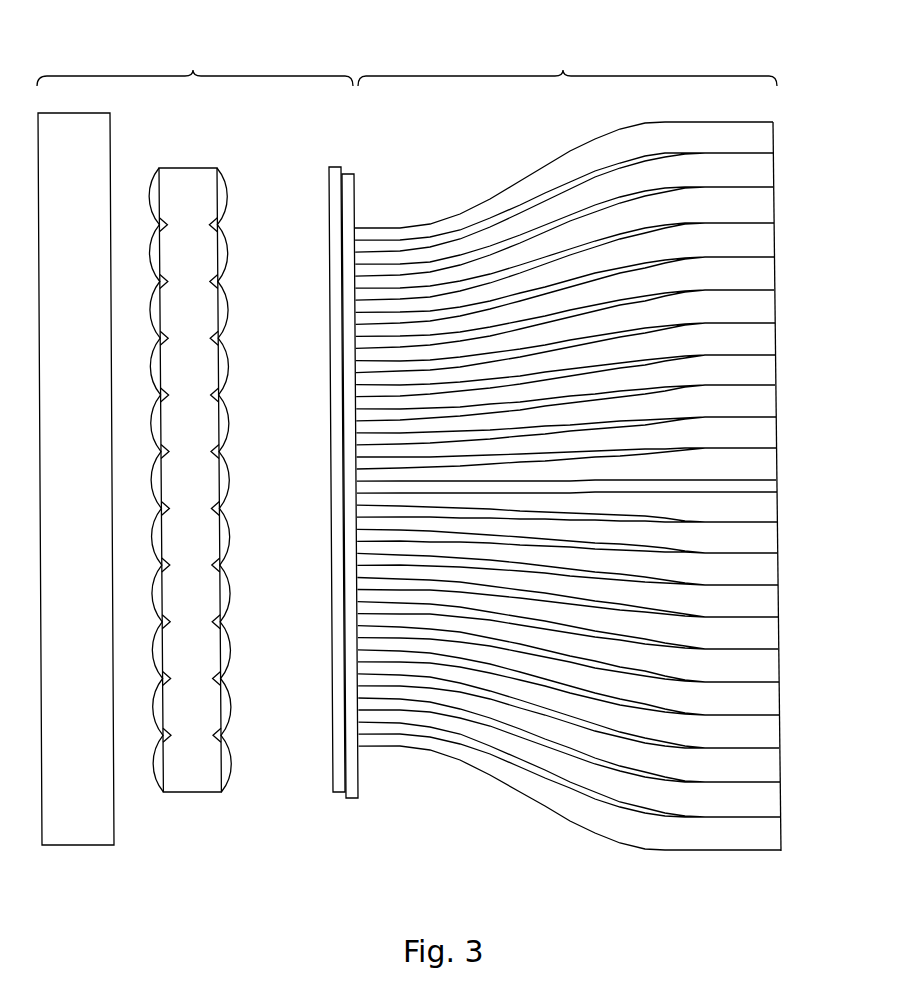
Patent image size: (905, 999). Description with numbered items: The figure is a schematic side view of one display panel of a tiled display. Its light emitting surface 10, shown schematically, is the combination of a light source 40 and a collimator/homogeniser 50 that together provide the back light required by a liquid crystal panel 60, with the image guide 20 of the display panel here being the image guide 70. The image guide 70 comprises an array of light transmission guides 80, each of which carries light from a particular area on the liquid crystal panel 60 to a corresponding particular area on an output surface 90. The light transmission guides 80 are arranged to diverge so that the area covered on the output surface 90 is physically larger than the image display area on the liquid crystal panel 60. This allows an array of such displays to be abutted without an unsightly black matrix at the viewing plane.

The light emitting surface 10 is at (193, 70).
The image guide 20 is at (563, 70).
The light source 40 is at (90, 845).
The collimator/homogeniser 50 is at (200, 792).
The liquid crystal panel 60 is at (325, 803).
The image guide 70 is at (480, 763).
The light transmission guide 80 is at (647, 795).
The output surface 90 is at (781, 758).